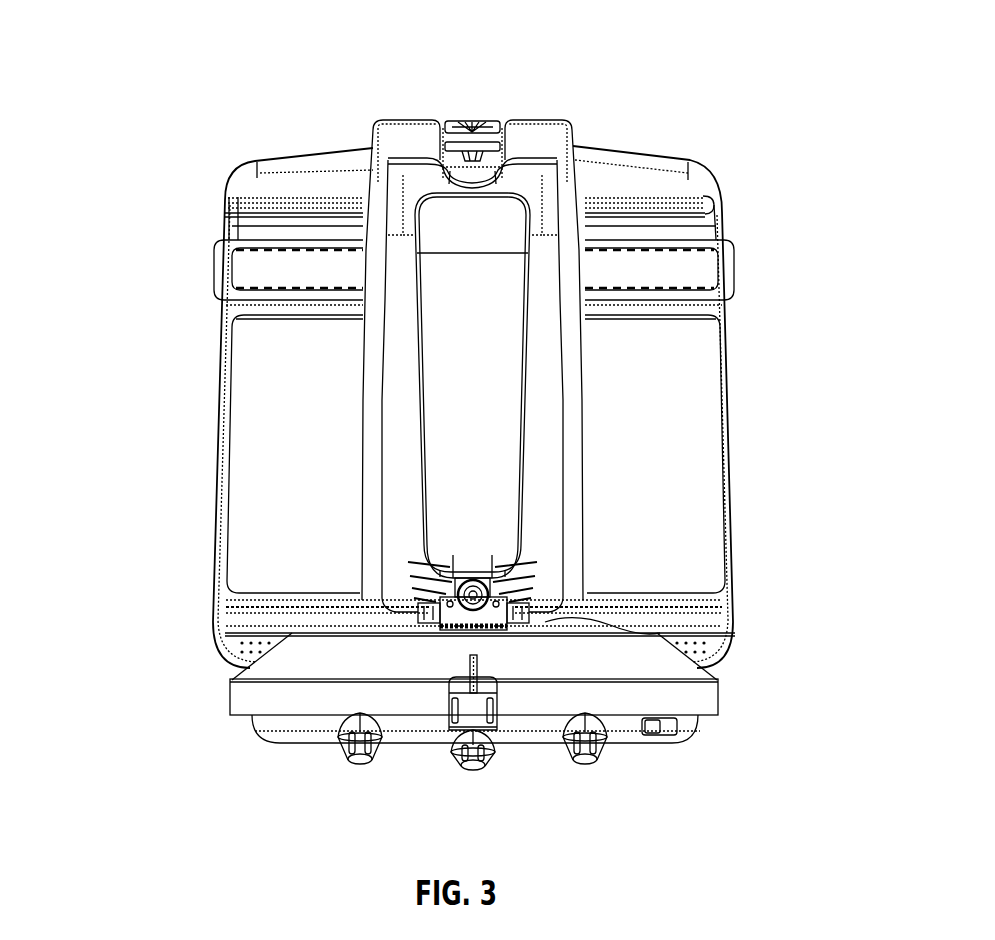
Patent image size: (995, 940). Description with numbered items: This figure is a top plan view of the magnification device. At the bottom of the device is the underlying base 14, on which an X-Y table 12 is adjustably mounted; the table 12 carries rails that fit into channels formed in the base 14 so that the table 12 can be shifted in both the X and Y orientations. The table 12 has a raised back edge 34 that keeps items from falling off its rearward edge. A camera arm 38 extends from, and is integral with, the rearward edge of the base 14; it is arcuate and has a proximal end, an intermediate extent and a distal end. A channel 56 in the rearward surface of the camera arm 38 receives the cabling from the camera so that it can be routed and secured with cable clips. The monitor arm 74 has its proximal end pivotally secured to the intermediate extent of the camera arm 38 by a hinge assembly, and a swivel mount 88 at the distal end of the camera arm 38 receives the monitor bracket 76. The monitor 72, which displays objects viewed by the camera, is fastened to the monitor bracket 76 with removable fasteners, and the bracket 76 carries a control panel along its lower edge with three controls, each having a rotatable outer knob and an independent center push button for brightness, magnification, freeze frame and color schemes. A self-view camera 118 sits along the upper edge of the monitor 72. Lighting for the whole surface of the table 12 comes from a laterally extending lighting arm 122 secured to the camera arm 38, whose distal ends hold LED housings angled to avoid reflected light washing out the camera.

The X-Y table 12 is at (648, 503).
The base 14 is at (621, 180).
The raised back edge 34 is at (712, 204).
The camera arm 38 is at (572, 471).
The channel 56 is at (467, 120).
The monitor 72 is at (688, 694).
The monitor arm 74 is at (464, 372).
The monitor bracket 76 is at (655, 636).
The swivel mount 88 is at (490, 596).
The self-view camera 118 is at (480, 730).
The lighting arm 122 is at (260, 269).